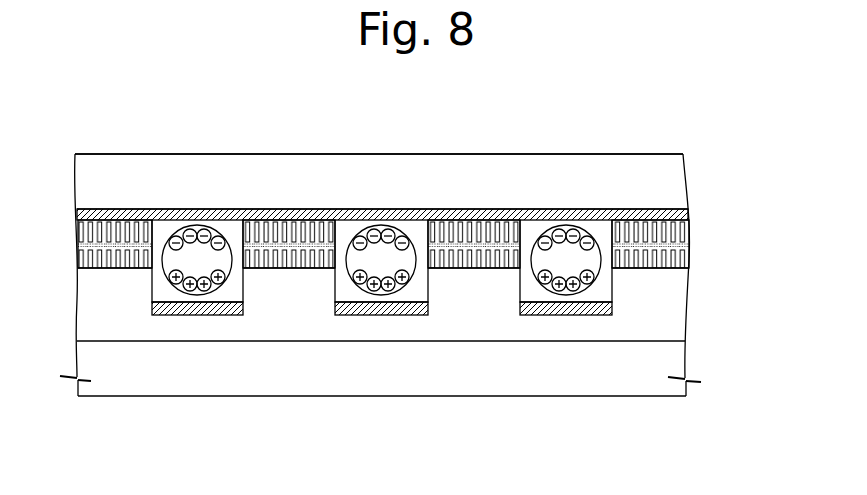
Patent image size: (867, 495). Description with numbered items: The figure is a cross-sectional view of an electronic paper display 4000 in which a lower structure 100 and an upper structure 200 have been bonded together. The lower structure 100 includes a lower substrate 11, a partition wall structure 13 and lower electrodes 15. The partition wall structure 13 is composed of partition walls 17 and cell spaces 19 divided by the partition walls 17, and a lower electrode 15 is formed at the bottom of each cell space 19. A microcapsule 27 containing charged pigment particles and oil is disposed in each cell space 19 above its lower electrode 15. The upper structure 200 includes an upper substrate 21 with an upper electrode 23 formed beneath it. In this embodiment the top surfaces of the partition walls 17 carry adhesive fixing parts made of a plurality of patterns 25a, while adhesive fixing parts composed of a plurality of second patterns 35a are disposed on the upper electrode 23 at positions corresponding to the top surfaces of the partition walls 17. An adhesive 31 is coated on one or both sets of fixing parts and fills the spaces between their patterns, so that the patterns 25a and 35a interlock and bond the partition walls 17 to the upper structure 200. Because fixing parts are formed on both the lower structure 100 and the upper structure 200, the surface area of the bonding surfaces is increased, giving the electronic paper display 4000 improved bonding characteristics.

The electronic paper display 4000 is at (639, 141).
The upper structure 200 is at (762, 147).
The upper substrate 21 is at (672, 182).
The upper electrode 23 is at (683, 206).
The first patterns 25a is at (690, 218).
The adhesive 31 is at (78, 245).
The second patterns 35a is at (601, 250).
The cell spaces 19 is at (598, 280).
The partition walls 17 is at (677, 300).
The lower electrode 15 is at (613, 307).
The partition wall structure 13 is at (749, 255).
The microcapsules 27 is at (563, 291).
The lower substrate 11 is at (672, 362).
The lower structure 100 is at (785, 225).